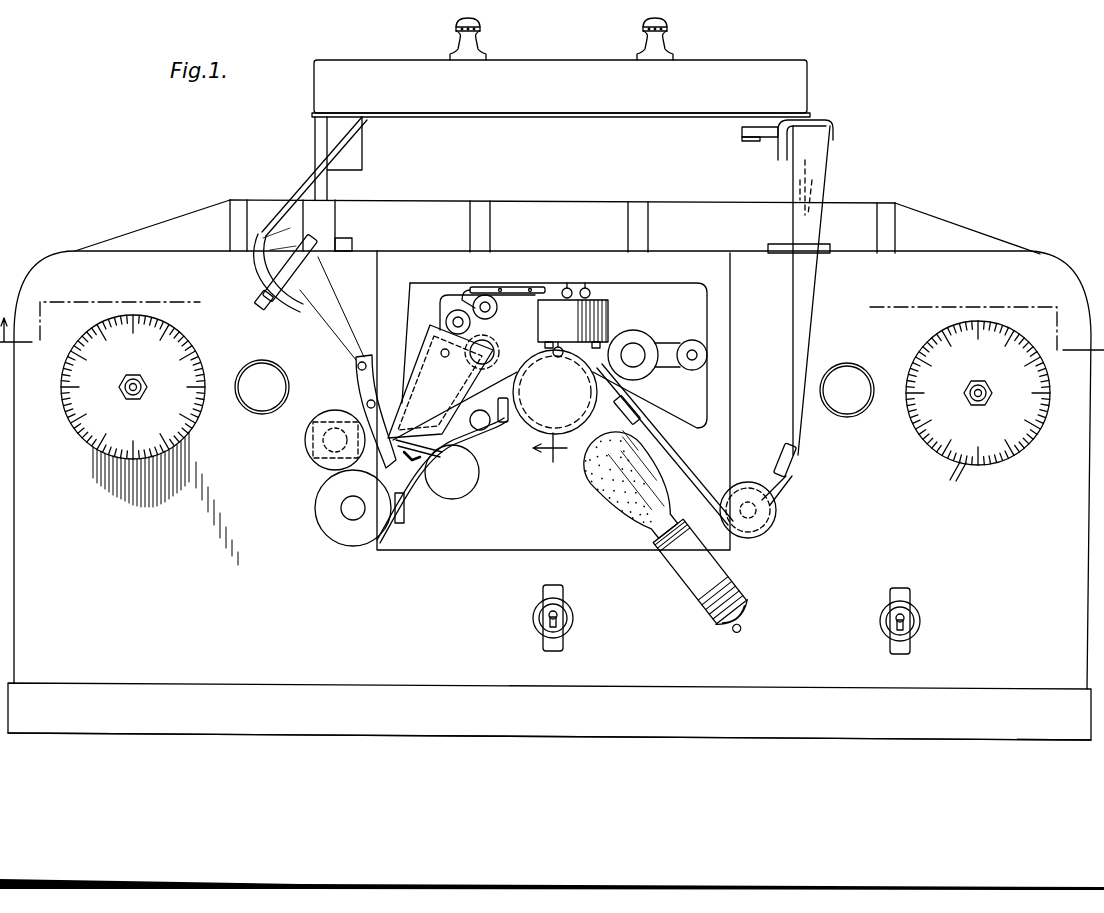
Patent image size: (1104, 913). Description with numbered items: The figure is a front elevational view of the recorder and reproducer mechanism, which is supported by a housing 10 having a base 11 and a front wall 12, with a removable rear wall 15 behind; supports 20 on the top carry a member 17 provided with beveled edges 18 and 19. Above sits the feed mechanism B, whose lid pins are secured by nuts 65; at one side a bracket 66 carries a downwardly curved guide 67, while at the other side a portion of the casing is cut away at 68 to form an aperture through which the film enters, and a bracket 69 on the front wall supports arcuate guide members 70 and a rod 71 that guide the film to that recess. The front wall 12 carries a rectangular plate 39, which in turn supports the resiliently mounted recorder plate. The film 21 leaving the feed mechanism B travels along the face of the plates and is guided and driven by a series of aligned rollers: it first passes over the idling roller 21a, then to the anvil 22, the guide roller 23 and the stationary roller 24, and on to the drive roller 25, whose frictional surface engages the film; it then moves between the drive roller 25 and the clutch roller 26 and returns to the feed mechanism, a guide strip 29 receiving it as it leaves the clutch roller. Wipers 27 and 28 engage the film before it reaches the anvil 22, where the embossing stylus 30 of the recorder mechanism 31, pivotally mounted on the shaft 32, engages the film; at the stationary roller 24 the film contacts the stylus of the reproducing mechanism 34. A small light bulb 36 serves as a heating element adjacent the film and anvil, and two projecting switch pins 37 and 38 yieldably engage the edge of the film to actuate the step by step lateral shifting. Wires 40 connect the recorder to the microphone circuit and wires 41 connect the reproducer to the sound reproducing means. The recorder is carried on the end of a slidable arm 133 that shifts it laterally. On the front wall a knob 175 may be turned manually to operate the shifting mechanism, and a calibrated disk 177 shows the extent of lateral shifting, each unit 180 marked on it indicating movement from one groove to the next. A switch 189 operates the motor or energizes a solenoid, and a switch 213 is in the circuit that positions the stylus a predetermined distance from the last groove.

The housing 10 is at (1063, 261).
The base 11 is at (978, 722).
The front wall 12 is at (510, 670).
The removable rear wall 15 is at (550, 458).
The member 17 is at (905, 209).
The beveled edge 18 is at (978, 244).
The beveled edge 19 is at (155, 228).
The supports 20 is at (492, 225).
The film 21 is at (800, 335).
The idling roller 21a is at (777, 512).
The anvil 22 is at (615, 412).
The guide roller 23 is at (476, 410).
The stationary roller 24 is at (474, 483).
The drive roller 25 is at (332, 520).
The clutch roller 26 is at (318, 452).
The wiper 27 is at (640, 425).
The wiper 28 is at (795, 464).
The guide strip 29 is at (358, 362).
The embossing stylus 30 is at (557, 358).
The recorder mechanism 31 is at (600, 312).
The shaft 32 is at (632, 342).
The reproducing mechanism 34 is at (425, 368).
The light bulb 36 is at (645, 535).
The switch pin 37 is at (506, 422).
The switch pin 38 is at (405, 512).
The rectangular plate 39 is at (472, 551).
The wires 40 is at (586, 290).
The wires 41 is at (515, 290).
The nuts 65 is at (483, 60).
The bracket 66 is at (757, 139).
The downwardly curved guide 67 is at (782, 160).
The cut-away portion 68 is at (336, 133).
The bracket 69 is at (292, 228).
The arcuate guide members 70 is at (305, 277).
The rod 71 is at (260, 290).
The arm 133 is at (650, 350).
The knob 175 is at (852, 414).
The calibrated disk 177 is at (1002, 458).
The unit 180 is at (965, 480).
The switch 189 is at (575, 616).
The switch 213 is at (922, 622).
The feed mechanism B is at (303, 107).